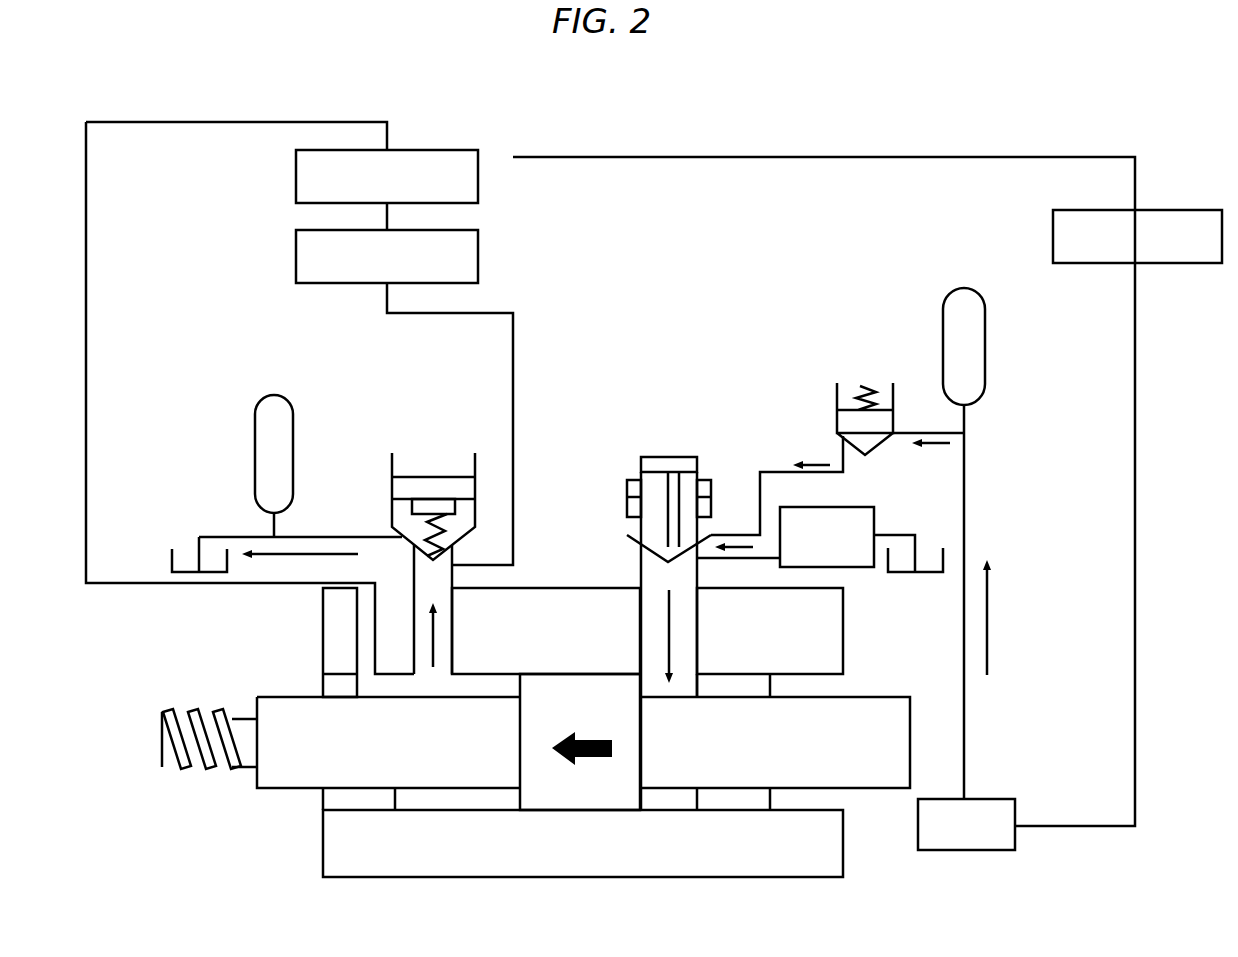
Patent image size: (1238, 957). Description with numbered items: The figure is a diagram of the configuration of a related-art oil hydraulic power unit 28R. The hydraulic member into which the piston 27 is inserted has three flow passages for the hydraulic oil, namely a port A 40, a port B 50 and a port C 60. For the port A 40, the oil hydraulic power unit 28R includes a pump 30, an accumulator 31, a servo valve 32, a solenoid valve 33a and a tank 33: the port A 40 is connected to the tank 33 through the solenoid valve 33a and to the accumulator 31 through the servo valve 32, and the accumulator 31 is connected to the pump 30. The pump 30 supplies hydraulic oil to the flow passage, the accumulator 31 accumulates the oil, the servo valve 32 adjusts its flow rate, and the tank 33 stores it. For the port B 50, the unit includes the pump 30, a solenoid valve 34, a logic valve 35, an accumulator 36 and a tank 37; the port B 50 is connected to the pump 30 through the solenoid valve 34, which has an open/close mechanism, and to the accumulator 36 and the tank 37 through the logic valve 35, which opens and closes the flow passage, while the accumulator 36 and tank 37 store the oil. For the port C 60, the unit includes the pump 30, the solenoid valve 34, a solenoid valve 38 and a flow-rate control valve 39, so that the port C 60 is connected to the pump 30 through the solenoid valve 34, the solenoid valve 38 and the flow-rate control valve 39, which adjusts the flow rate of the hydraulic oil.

The piston 27 is at (587, 797).
The oil hydraulic power unit 28R is at (1125, 122).
The pump 30 is at (967, 850).
The accumulator 31 is at (962, 305).
The servo valve 32 is at (668, 462).
The tank 33 is at (930, 560).
The solenoid valve 33a is at (864, 567).
The solenoid valve 34 is at (1178, 208).
The logic valve 35 is at (433, 490).
The accumulator 36 is at (271, 415).
The tank 37 is at (186, 567).
The solenoid valve 38 is at (296, 255).
The flow-rate control valve 39 is at (296, 177).
The port A 40 is at (698, 625).
The port B 50 is at (453, 625).
The port C 60 is at (357, 624).